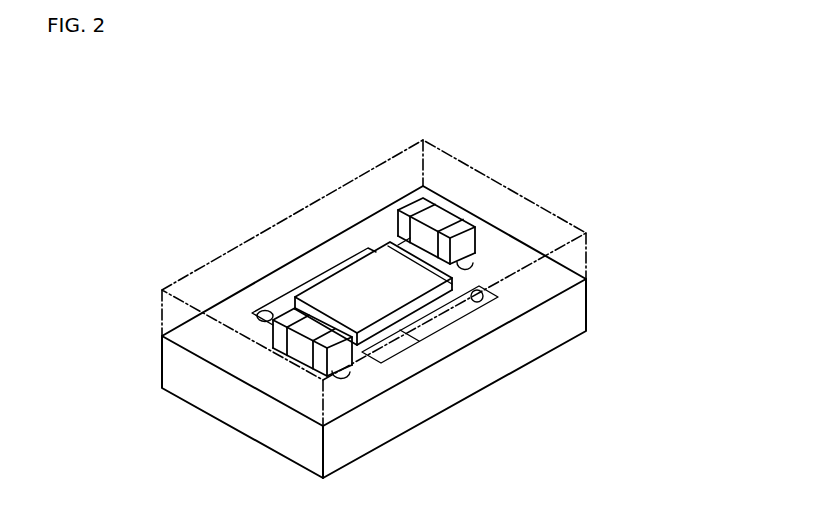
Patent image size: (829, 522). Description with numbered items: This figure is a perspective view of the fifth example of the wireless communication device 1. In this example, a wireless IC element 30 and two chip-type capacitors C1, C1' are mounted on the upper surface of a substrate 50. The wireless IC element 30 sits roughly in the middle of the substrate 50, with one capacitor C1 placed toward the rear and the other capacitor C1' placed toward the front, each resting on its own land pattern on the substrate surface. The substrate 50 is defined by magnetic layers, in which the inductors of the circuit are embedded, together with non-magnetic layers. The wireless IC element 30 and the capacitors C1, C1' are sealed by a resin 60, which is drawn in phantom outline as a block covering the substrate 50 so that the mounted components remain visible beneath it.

The wireless communication device 1 is at (173, 173).
The wireless IC element 30 is at (347, 285).
The substrate 50 is at (585, 305).
The resin 60 is at (557, 214).
The capacitor C1 is at (459, 207).
The capacitor C1' is at (289, 364).